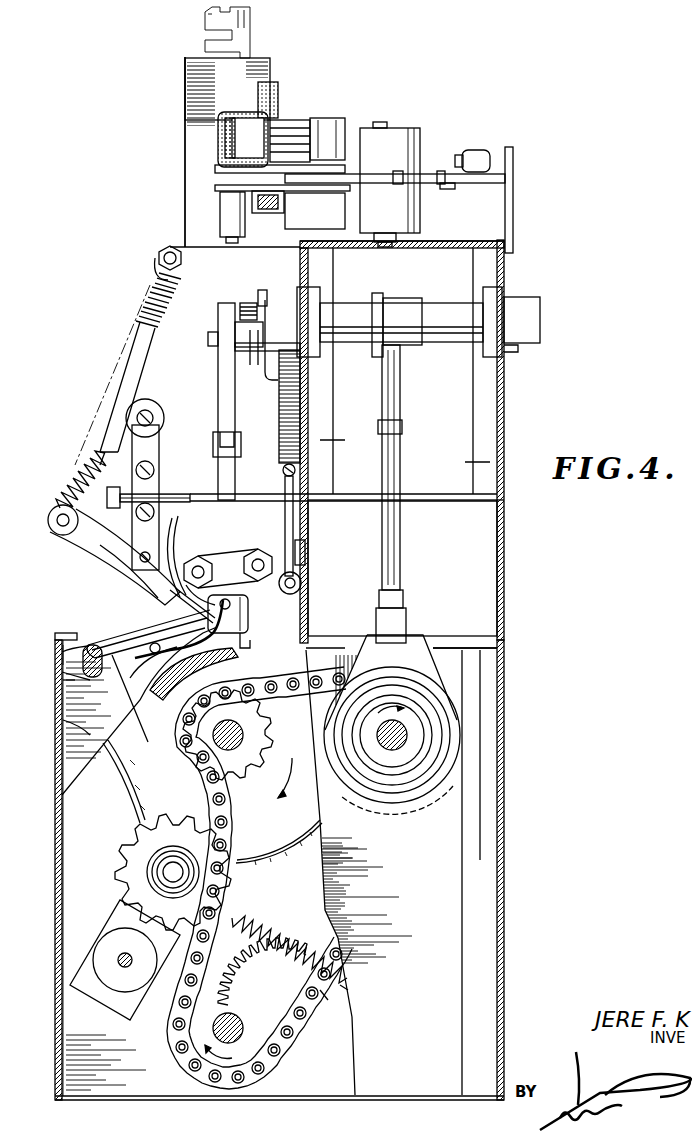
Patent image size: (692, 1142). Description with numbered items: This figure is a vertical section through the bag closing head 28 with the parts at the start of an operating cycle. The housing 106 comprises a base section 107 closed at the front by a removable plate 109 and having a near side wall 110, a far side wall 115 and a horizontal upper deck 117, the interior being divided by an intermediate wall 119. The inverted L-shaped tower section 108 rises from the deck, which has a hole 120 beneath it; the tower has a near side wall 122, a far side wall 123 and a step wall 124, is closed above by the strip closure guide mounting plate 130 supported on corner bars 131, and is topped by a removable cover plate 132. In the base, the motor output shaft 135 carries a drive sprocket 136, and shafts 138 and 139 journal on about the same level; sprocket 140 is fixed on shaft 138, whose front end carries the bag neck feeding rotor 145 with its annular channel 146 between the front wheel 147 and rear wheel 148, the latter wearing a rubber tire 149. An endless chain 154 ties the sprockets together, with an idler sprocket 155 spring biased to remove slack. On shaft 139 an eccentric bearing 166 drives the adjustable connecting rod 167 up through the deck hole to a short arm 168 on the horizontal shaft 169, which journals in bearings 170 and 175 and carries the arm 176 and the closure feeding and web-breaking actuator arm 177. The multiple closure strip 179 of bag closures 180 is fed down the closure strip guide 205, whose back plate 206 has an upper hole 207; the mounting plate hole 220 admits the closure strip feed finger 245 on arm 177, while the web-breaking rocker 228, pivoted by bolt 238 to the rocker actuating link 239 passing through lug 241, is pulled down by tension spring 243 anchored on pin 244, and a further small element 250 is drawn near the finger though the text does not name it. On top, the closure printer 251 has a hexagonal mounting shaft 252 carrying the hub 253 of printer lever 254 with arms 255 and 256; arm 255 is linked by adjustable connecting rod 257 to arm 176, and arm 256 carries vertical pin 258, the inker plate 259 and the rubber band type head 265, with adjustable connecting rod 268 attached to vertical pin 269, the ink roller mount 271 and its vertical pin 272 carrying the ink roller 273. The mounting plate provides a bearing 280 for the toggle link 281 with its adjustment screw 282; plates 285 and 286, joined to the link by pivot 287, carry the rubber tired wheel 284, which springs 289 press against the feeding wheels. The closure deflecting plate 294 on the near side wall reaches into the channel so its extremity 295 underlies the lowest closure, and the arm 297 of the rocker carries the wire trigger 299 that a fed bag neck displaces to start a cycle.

The bag closing head 28 is at (95, 380).
The housing 106 is at (508, 703).
The base section 107 is at (508, 862).
The tower section 108 is at (508, 408).
The removable plate 109 is at (125, 970).
The near side wall 110 is at (58, 878).
The far side wall 115 is at (500, 813).
The horizontal upper deck 117 is at (60, 634).
The intermediate wall 119 is at (367, 872).
The hole 120 is at (476, 646).
The near side wall 122 is at (302, 525).
The far side wall 123 is at (505, 532).
The step wall 124 is at (470, 568).
The strip closure guide mounting plate 130 is at (182, 246).
The corner bars 131 is at (405, 451).
The removable cover plate 132 is at (427, 243).
The output shaft 135 is at (236, 1018).
The drive sprocket 136 is at (250, 948).
The shaft 138 is at (212, 742).
The shaft 139 is at (390, 750).
The sprocket 140 is at (269, 786).
The bag neck feeding rotor 145 is at (118, 793).
The annular channel 146 is at (183, 712).
The front wheel 147 is at (63, 720).
The rear wheel 148 is at (120, 757).
The rubber tire 149 is at (264, 862).
The endless chain 154 is at (314, 1020).
The idler sprocket 155 is at (117, 876).
The eccentric bearing 166 is at (410, 760).
The adjustable connecting rod 167 is at (402, 528).
The short arm 168 is at (370, 315).
The horizontal shaft 169 is at (420, 322).
The bearing 170 is at (300, 292).
The bearing 175 is at (492, 305).
The arm 176 is at (513, 213).
The closure feeding and web-breaking actuator arm 177 is at (262, 293).
The multiple closure strip 179 is at (252, 38).
The bag closures 180 is at (247, 642).
The closure strip guide 205 is at (183, 113).
The back plate 206 is at (258, 72).
The upper hole 207 is at (218, 130).
The hole 220 is at (228, 455).
The web-breaking rocker 228 is at (242, 565).
The bolt 238 is at (302, 585).
The rocker actuating link 239 is at (303, 552).
The lug 241 is at (268, 385).
The tension spring 243 is at (302, 403).
The pin 244 is at (295, 476).
The closure strip feed finger 245 is at (220, 383).
The spring 250 is at (238, 305).
The closure printer 251 is at (292, 105).
The hexagonal mounting shaft 252 is at (407, 248).
The hub 253 is at (405, 140).
The printer lever 254 is at (418, 175).
The arm 255 is at (448, 184).
The arm 256 is at (370, 128).
The adjustable connecting rod 257 is at (480, 150).
The vertical pin 258 is at (314, 120).
The inker plate 259 is at (217, 188).
The rubber band type head 265 is at (345, 176).
The adjustable connecting rod 268 is at (262, 212).
The vertical pin 269 is at (278, 208).
The ink roller mount 271 is at (218, 170).
The vertical pin 272 is at (268, 90).
The ink roller 273 is at (243, 125).
The bearing 280 is at (162, 415).
The toggle link 281 is at (98, 448).
The adjustment screw 282 is at (108, 495).
The rubber tired wheel 284 is at (205, 600).
The plate 285 is at (80, 548).
The plate 286 is at (135, 575).
The pivot 287 is at (138, 557).
The springs 289 is at (80, 465).
The closure deflecting plate 294 is at (62, 688).
The extremity 295 is at (175, 625).
The arm 297 is at (62, 658).
The wire trigger 299 is at (120, 672).